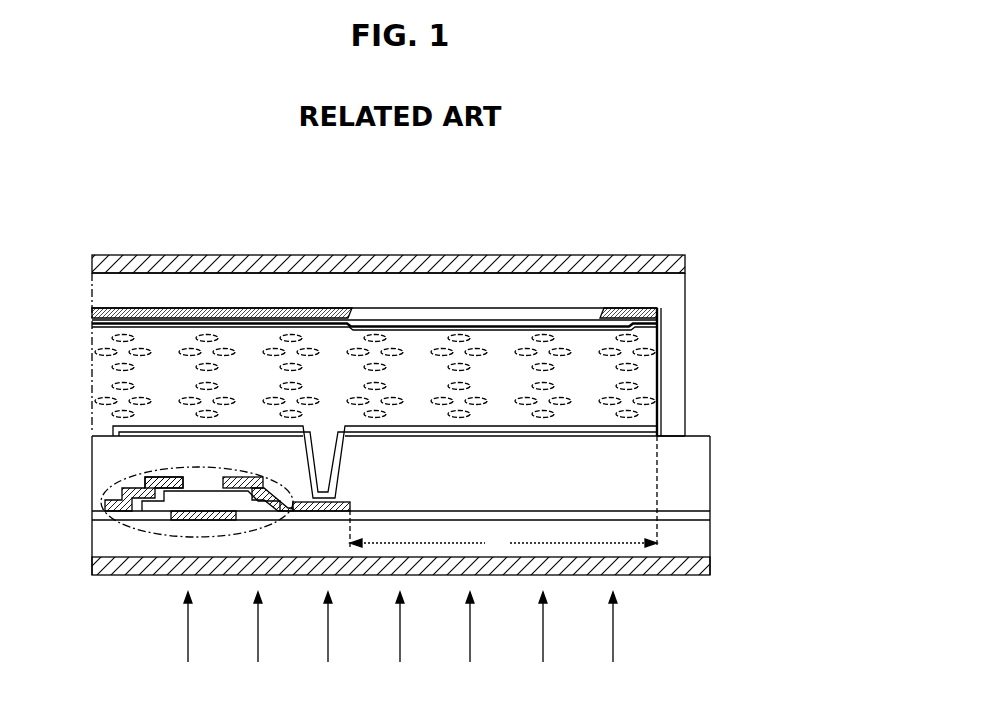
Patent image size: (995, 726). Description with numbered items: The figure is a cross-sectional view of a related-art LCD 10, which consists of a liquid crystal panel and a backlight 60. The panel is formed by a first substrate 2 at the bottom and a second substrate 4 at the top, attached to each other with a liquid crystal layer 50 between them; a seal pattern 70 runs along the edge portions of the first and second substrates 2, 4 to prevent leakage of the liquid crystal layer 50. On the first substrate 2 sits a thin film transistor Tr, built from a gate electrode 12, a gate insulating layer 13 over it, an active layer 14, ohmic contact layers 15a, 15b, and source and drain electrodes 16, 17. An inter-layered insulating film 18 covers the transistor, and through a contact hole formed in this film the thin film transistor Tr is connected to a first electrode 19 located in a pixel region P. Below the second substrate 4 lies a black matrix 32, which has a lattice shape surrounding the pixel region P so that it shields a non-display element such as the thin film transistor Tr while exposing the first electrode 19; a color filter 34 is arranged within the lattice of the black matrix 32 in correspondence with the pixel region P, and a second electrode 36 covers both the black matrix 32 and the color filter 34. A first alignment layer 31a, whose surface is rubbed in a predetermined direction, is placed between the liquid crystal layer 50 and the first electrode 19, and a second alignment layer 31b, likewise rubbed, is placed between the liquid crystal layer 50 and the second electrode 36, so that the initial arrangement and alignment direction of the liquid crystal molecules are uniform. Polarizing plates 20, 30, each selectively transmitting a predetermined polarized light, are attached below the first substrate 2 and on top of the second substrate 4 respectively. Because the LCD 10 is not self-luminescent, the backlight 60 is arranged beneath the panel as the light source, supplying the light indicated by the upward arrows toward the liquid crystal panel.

The LCD 10 is at (623, 238).
The polarizing plate 30 is at (507, 255).
The second substrate 4 is at (668, 290).
The black matrix 32 is at (92, 310).
The color filter 34 is at (422, 316).
The second electrode 36 is at (92, 322).
The second alignment layer 31b is at (656, 327).
The liquid crystal layer 50 is at (105, 374).
The seal pattern 70 is at (672, 373).
The first alignment layer 31a is at (656, 424).
The first electrode 19 is at (473, 437).
The inter-layered insulating film 18 is at (103, 468).
The first substrate 2 is at (700, 540).
The polarizing plate 20 is at (700, 566).
The gate insulating layer 13 is at (255, 517).
The gate electrode 12 is at (196, 521).
The active layer 14 is at (142, 505).
The source electrode 16 is at (142, 477).
The ohmic contact layer 15a is at (173, 477).
The ohmic contact layer 15b is at (230, 477).
The drain electrode 17 is at (308, 512).
The thin film transistor Tr is at (157, 536).
The pixel region P is at (503, 494).
The backlight 60 is at (400, 642).